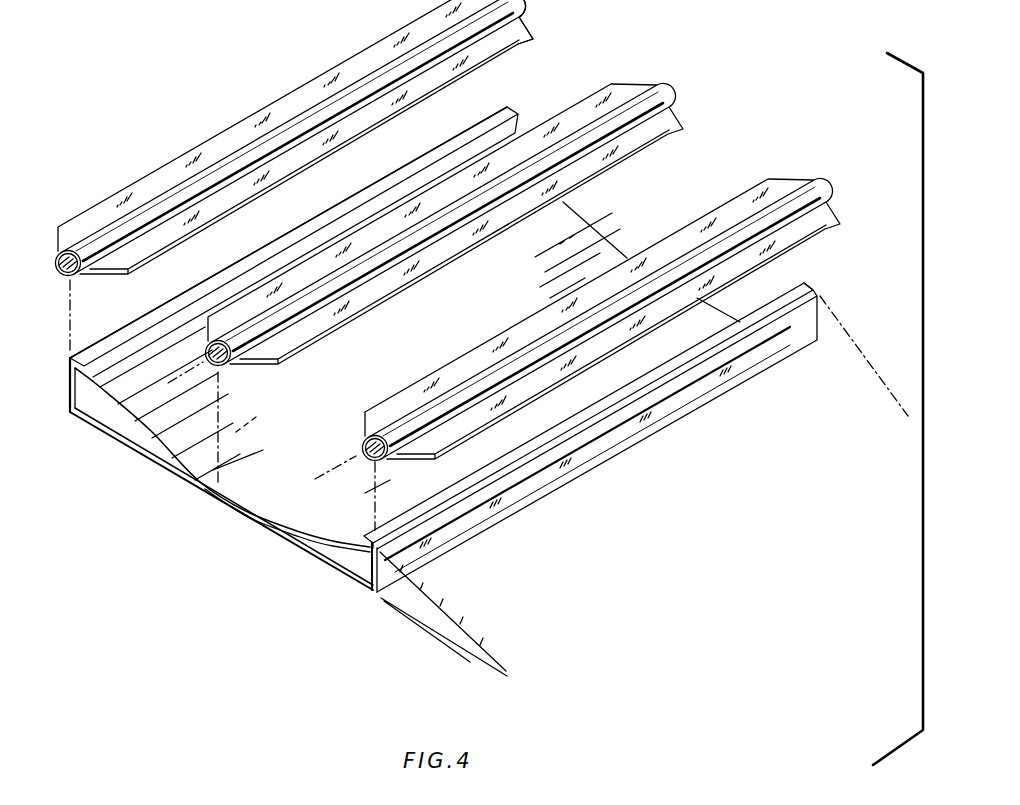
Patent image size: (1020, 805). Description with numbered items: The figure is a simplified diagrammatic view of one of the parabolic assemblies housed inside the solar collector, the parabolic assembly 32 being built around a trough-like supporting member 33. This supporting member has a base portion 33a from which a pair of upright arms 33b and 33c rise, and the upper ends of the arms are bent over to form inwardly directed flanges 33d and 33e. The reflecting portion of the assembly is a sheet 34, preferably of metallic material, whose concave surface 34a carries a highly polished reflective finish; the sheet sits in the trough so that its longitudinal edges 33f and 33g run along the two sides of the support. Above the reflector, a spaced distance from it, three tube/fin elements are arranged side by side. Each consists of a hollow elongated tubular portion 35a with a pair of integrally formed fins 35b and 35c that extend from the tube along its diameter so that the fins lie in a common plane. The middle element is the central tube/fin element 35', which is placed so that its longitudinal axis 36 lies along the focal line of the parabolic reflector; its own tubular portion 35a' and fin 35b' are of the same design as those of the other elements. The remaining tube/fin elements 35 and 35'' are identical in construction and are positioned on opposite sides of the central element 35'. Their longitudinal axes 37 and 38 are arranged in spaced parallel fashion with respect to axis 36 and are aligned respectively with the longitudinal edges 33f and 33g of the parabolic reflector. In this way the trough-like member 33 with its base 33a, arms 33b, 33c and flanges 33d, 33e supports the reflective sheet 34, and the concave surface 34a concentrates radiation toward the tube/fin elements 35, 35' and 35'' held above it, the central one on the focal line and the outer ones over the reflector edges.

The parabolic assembly 32 is at (200, 520).
The trough-like supporting member 33 is at (150, 470).
The base portion 33a is at (287, 543).
The upright arm 33b is at (70, 405).
The upright arm 33c is at (372, 590).
The inwardly directed flange 33d is at (165, 309).
The inwardly directed flange 33e is at (540, 445).
The longitudinal edge 33f is at (245, 257).
The longitudinal edge 33g is at (460, 498).
The sheet 34 is at (322, 543).
The concave surface 34a is at (250, 512).
The tube/fin element 35 is at (318, 137).
The hollow elongated tubular portion 35a is at (294, 131).
The fin 35b is at (292, 114).
The fin 35c is at (507, 47).
The central tube/fin element 35' is at (445, 208).
The tube/fin element 35'' is at (602, 296).
The absorber flange 35a' is at (472, 252).
The absorber fin plate of second rail 35b' is at (429, 195).
The longitudinal axis 36 is at (193, 370).
The longitudinal axis 37 is at (56, 263).
The longitudinal axis 38 is at (335, 464).